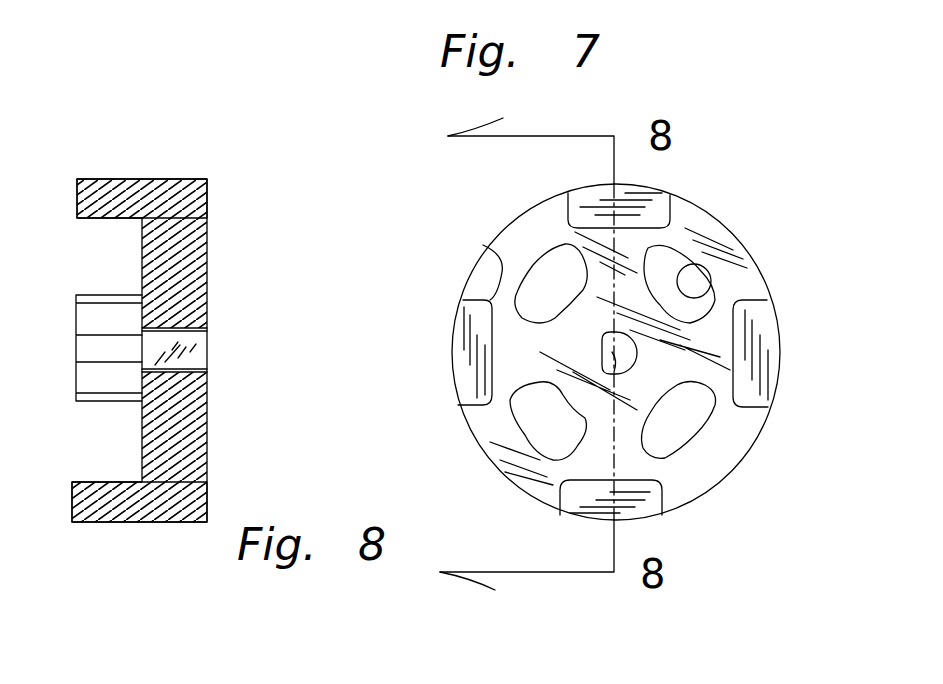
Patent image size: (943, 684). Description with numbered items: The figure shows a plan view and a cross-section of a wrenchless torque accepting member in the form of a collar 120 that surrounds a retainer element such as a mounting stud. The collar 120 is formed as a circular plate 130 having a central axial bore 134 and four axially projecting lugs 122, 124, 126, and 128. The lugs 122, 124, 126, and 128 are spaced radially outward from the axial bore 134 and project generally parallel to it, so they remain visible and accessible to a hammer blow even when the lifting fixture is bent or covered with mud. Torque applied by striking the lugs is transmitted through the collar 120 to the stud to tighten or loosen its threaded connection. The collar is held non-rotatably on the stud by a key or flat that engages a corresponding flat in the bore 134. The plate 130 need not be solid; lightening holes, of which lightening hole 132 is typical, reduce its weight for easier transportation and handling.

In FIG. 7, the collar 120 is at (722, 62).
In FIG. 8, the lug 122 is at (103, 179).
In FIG. 7, the lug 122 is at (650, 208).
In FIG. 7, the lug 124 is at (745, 407).
In FIG. 8, the lug 126 is at (107, 505).
In FIG. 7, the lug 126 is at (593, 497).
In FIG. 8, the lug 128 is at (75, 362).
In FIG. 7, the lug 128 is at (483, 245).
In FIG. 8, the circular plate 130 is at (185, 179).
In FIG. 7, the circular plate 130 is at (730, 227).
In FIG. 7, the lightening hole 132 is at (682, 292).
In FIG. 8, the axial bore 134 is at (200, 350).
In FIG. 7, the axial bore 134 is at (612, 372).